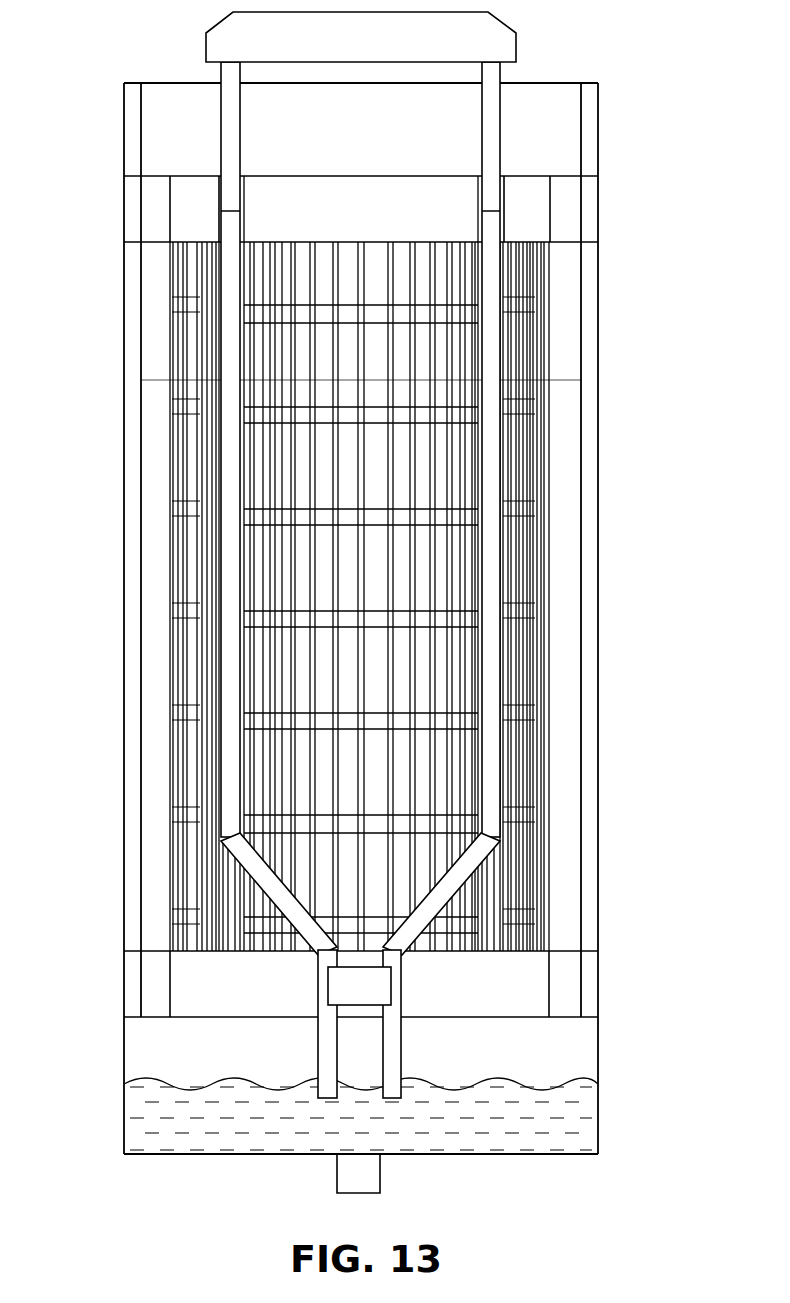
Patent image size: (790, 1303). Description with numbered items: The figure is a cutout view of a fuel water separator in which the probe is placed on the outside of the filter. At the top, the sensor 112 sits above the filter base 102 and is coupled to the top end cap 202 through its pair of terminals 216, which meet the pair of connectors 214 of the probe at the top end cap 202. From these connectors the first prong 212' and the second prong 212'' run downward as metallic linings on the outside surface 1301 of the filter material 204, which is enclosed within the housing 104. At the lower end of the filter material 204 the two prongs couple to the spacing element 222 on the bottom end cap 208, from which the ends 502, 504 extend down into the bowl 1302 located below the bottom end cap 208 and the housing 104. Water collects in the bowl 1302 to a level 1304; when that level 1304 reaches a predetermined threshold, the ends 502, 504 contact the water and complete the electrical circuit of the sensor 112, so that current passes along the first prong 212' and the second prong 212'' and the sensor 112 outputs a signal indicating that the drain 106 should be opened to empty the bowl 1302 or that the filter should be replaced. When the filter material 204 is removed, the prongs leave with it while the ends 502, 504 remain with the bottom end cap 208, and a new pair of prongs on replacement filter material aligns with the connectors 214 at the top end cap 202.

The sensor 112 is at (220, 30).
The pair of terminals 216 is at (230, 81).
The filter base 102 is at (573, 148).
The top end cap 202 is at (572, 211).
The pair of connectors 214 is at (232, 191).
The first prong 212' is at (451, 563).
The second prong 212'' is at (149, 596).
The filter material 204 is at (530, 477).
The outside surface 1301 is at (200, 573).
The housing 104 is at (593, 720).
The bottom end cap 208 is at (563, 981).
The bowl 1302 is at (578, 1050).
The level 1304 is at (598, 1082).
The spacing element 222 is at (374, 1000).
The end 504 is at (328, 1087).
The end 502 is at (392, 1087).
The drain 106 is at (377, 1168).